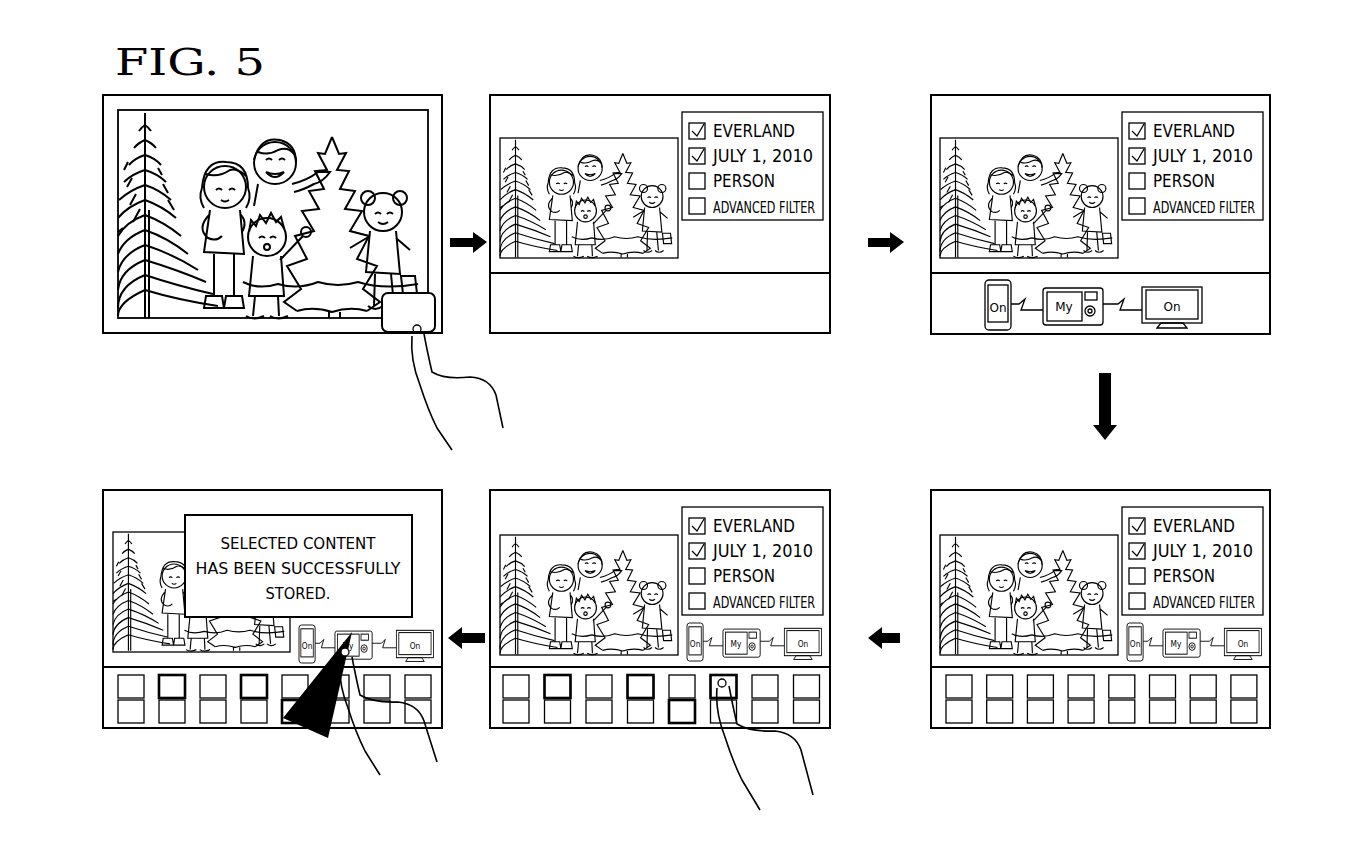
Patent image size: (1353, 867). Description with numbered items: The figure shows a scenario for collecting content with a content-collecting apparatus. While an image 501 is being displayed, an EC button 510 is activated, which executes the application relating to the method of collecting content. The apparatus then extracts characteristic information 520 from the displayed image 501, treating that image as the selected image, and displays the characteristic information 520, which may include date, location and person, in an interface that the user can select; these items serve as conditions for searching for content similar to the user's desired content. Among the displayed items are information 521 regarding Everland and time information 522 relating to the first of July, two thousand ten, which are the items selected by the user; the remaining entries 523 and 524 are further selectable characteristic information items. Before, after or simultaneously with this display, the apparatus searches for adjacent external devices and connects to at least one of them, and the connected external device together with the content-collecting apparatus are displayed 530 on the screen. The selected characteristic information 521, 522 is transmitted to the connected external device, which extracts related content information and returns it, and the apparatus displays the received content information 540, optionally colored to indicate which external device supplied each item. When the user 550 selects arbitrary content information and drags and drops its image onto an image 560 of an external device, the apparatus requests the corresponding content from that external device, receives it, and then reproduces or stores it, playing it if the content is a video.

The image 501 is at (193, 312).
The EC button 510 is at (388, 332).
The characteristic information 520 is at (1017, 363).
The information regarding Everland 521 is at (1278, 523).
The time information 522 is at (1278, 548).
The person filter item 523 is at (1278, 573).
The advanced filter item 524 is at (1278, 598).
The display of connected external device and content-collecting apparatus 530 is at (1209, 306).
The content information 540 is at (1270, 700).
The user 550 is at (745, 765).
The image of an external device 560 is at (312, 728).